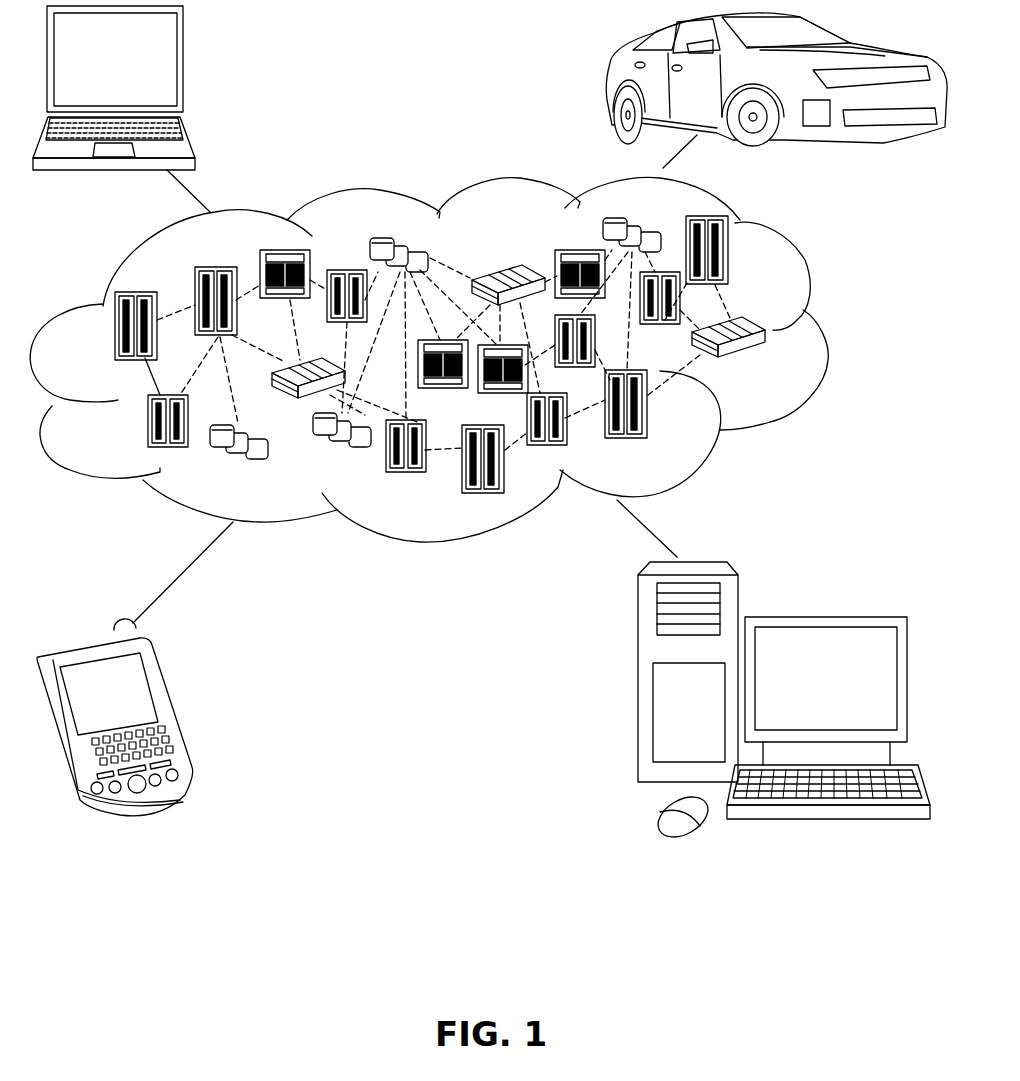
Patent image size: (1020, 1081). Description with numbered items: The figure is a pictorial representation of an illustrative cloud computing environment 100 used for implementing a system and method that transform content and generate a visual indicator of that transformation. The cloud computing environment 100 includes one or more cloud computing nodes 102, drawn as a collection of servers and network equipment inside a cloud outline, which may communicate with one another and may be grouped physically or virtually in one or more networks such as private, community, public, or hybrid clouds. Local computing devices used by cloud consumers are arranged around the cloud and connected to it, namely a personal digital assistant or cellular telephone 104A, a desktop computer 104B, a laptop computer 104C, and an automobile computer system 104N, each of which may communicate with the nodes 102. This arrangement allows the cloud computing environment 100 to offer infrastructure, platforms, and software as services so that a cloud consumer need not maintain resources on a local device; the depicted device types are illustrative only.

The cloud computing environment 100 is at (825, 337).
The cloud computing nodes 102 is at (780, 368).
The personal digital assistant or cellular telephone 104A is at (172, 708).
The desktop computer 104B is at (822, 615).
The laptop computer 104C is at (183, 67).
The automobile computer system 104N is at (608, 80).